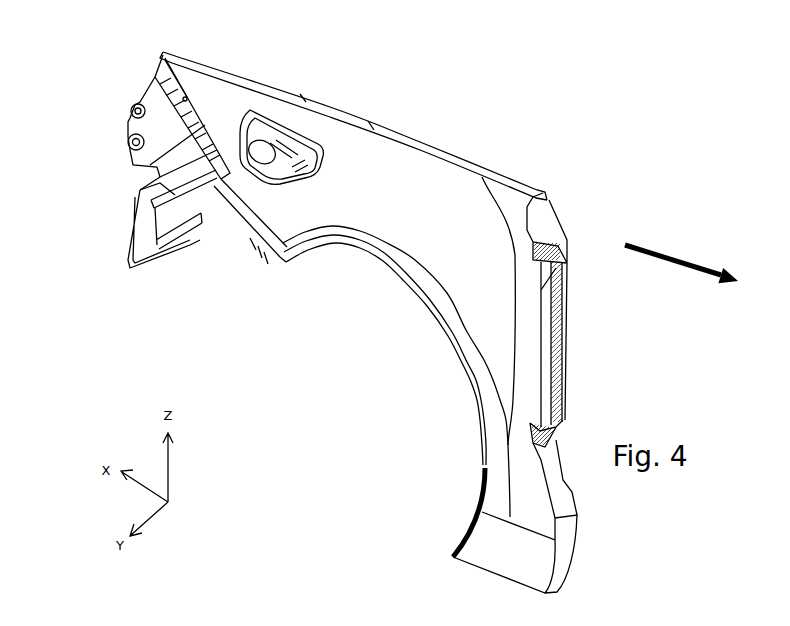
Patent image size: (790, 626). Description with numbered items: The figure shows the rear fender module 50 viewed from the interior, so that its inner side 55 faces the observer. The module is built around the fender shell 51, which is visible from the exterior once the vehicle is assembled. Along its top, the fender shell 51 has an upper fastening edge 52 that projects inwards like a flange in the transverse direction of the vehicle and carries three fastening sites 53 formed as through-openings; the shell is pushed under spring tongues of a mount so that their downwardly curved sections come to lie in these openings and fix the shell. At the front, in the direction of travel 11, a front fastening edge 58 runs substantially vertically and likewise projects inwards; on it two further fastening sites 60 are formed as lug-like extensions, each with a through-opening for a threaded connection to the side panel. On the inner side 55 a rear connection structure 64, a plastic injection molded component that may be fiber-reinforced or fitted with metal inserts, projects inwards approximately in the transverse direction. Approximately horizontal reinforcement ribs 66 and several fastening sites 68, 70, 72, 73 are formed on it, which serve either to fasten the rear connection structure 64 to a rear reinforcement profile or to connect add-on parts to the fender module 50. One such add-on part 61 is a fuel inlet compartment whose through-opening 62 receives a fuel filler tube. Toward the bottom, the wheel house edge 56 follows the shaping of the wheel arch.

The direction of travel 11 is at (680, 258).
The rear fender module 50 is at (437, 98).
The fender shell 51 is at (462, 187).
The upper fastening edge 52 is at (265, 88).
The fastening sites 53 is at (302, 100).
The inner side 55 is at (414, 247).
The wheel house edge 56 is at (349, 270).
The front fastening edge 58 is at (543, 245).
The fastening sites 60 is at (558, 262).
The add-on part 61 is at (259, 117).
The through-opening 62 is at (284, 173).
The rear connection structure 64 is at (158, 259).
The reinforcement ribs 66 is at (176, 160).
The fastening site 68 is at (181, 100).
The fastening site 70 is at (131, 113).
The fastening site 72 is at (128, 142).
The fastening site 73 is at (187, 243).